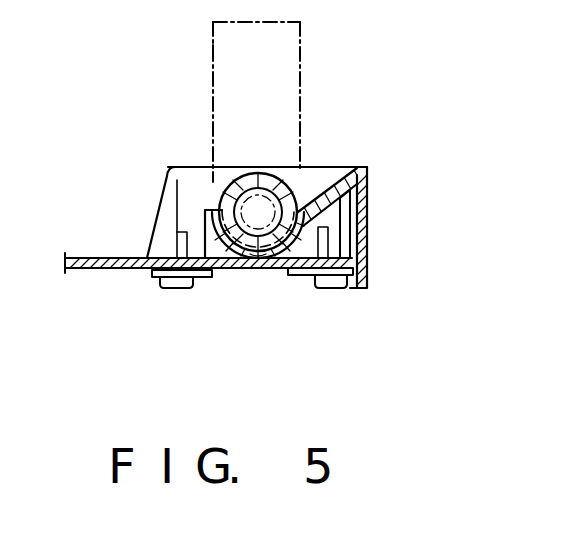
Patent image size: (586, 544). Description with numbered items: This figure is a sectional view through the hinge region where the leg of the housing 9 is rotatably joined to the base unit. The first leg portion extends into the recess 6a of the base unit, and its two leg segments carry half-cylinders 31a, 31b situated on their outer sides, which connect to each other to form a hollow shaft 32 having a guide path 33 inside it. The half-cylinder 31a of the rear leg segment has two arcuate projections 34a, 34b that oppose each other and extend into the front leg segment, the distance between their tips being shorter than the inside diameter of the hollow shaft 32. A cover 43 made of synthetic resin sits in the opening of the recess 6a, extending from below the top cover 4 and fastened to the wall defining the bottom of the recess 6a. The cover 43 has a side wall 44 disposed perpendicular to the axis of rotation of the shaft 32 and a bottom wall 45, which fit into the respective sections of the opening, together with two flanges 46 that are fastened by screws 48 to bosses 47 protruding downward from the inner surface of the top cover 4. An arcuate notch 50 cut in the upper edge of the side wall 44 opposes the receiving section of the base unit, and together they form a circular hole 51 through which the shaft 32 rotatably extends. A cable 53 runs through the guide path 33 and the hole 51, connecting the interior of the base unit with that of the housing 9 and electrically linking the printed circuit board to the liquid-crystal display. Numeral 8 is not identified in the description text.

The top cover 4 is at (83, 270).
The recess 6a is at (188, 178).
The rotary shaft 8 is at (300, 70).
The housing 9 is at (213, 52).
The half-cylinder 31a is at (205, 198).
The half-cylinder 31b is at (323, 178).
The hollow shaft 32 is at (238, 271).
The guide path 33 is at (261, 272).
The arcuate projection 34a is at (288, 180).
The arcuate projection 34b is at (338, 250).
The cover 43 is at (304, 276).
The side wall 44 is at (185, 235).
The bottom wall 45 is at (221, 271).
The flange 46 is at (153, 273).
The boss 47 is at (348, 228).
The screw 48 is at (175, 288).
The arcuate notch 50 is at (285, 272).
The circular hole 51 is at (272, 176).
The cable 53 is at (243, 170).